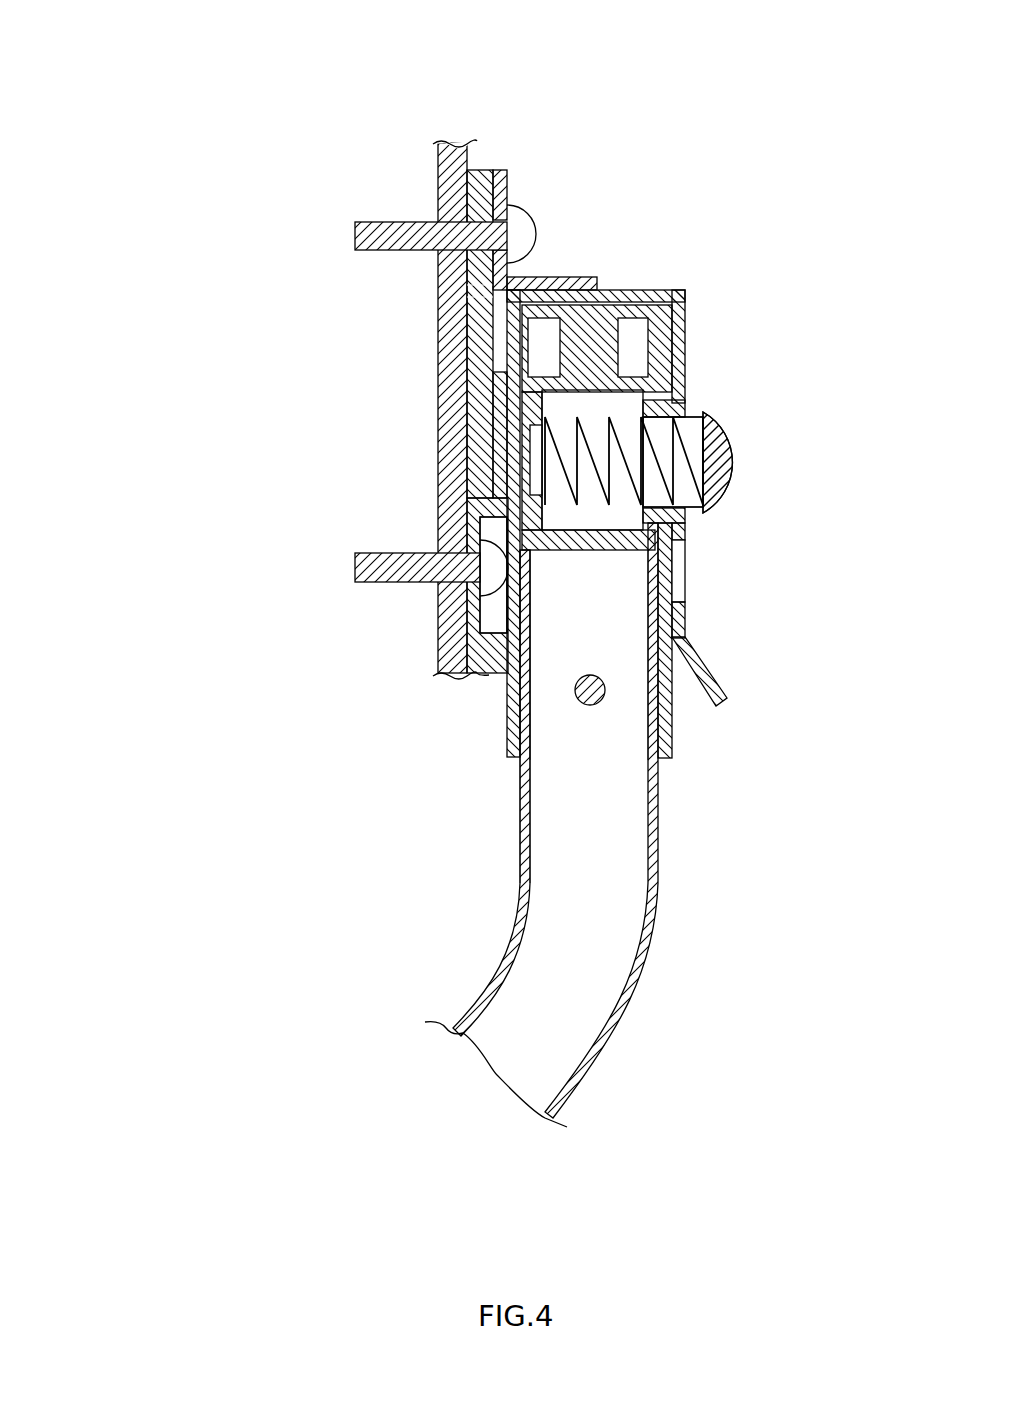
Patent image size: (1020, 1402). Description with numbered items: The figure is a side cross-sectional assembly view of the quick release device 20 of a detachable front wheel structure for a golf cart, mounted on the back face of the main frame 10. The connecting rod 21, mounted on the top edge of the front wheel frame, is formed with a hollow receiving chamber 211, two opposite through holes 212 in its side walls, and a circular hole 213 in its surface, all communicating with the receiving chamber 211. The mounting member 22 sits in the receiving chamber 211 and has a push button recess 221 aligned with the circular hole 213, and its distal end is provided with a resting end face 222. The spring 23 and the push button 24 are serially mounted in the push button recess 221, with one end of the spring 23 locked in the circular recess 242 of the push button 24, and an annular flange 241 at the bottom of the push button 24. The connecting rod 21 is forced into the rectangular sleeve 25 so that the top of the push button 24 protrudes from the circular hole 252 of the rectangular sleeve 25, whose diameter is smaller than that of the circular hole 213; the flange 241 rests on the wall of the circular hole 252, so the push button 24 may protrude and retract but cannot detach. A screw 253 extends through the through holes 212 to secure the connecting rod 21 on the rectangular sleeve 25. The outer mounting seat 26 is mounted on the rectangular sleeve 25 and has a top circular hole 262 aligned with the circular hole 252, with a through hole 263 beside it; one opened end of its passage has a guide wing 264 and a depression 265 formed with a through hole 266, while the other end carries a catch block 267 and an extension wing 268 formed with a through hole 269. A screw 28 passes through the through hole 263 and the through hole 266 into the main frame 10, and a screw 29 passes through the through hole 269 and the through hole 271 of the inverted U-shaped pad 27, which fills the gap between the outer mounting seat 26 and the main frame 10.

The main frame 10 is at (440, 363).
The quick release device 20 is at (229, 191).
The connecting rod 21 is at (658, 805).
The receiving chamber 211 is at (547, 610).
The through holes 212 is at (585, 708).
The circular hole 213 is at (633, 543).
The mounting member 22 is at (660, 353).
The push button recess 221 is at (560, 403).
The resting end face 222 is at (672, 318).
The spring 23 is at (548, 455).
The push button 24 is at (723, 427).
The annular flange 241 is at (665, 380).
The circular recess 242 is at (690, 470).
The rectangular sleeve 25 is at (672, 728).
The circular hole 252 is at (693, 523).
The screw 253 is at (575, 697).
The outer mounting seat 26 is at (680, 292).
The circular hole 262 is at (703, 407).
The through hole 263 is at (683, 590).
The guide wing 264 is at (713, 673).
The depression 265 is at (495, 630).
The through hole 266 is at (470, 562).
The catch block 267 is at (575, 283).
The extension wing 268 is at (507, 192).
The through hole 269 is at (448, 213).
The inverted U-shaped pad 27 is at (440, 310).
The through hole 271 is at (455, 290).
The screw 28 is at (468, 567).
The screw 29 is at (355, 232).